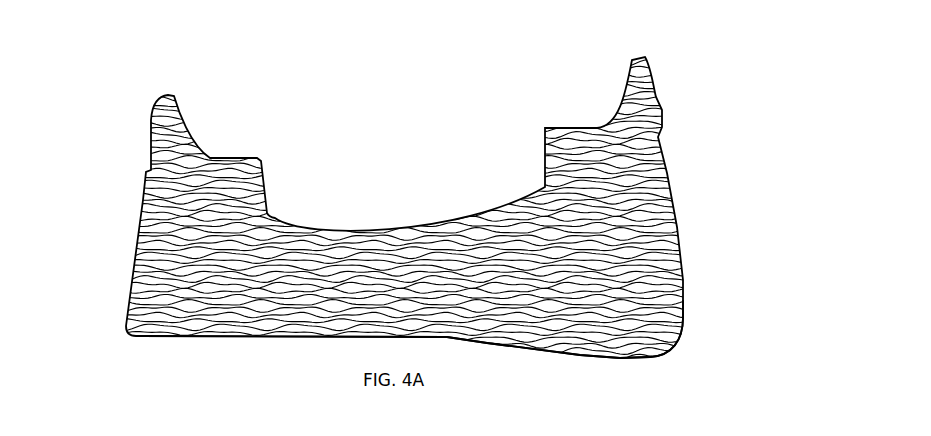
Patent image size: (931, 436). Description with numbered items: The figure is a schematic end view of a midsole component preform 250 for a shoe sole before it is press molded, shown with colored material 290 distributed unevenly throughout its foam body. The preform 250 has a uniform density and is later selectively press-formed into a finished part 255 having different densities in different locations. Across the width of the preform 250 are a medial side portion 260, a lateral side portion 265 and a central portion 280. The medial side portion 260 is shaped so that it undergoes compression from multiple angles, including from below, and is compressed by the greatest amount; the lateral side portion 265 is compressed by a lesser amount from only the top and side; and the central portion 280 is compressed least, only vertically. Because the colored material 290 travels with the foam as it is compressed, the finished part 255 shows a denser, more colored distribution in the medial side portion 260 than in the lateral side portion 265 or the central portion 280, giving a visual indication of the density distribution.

The midsole component preform 250 is at (131, 90).
The finished part 255 is at (77, 435).
The medial side portion 260 is at (669, 353).
The lateral side portion 265 is at (208, 340).
The central portion 280 is at (450, 340).
The colored material 290 is at (306, 265).